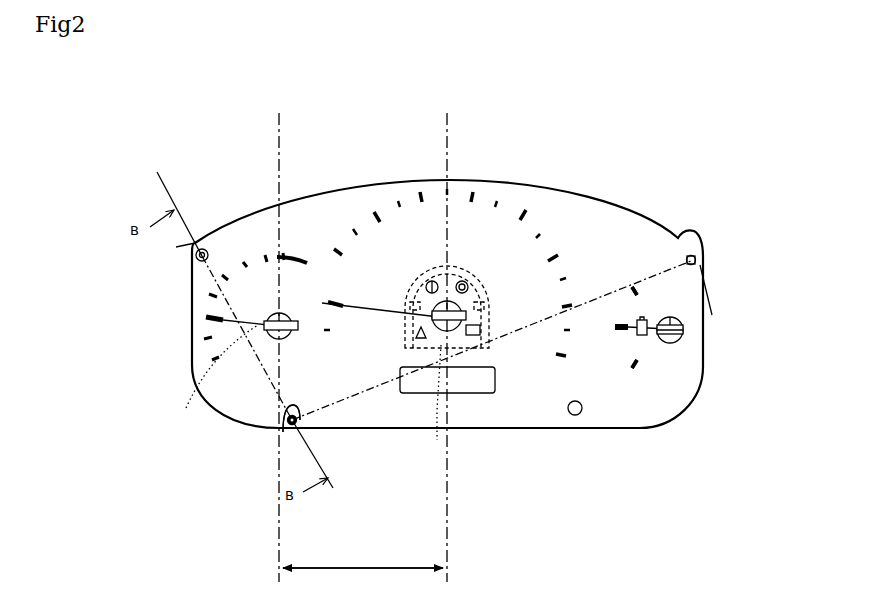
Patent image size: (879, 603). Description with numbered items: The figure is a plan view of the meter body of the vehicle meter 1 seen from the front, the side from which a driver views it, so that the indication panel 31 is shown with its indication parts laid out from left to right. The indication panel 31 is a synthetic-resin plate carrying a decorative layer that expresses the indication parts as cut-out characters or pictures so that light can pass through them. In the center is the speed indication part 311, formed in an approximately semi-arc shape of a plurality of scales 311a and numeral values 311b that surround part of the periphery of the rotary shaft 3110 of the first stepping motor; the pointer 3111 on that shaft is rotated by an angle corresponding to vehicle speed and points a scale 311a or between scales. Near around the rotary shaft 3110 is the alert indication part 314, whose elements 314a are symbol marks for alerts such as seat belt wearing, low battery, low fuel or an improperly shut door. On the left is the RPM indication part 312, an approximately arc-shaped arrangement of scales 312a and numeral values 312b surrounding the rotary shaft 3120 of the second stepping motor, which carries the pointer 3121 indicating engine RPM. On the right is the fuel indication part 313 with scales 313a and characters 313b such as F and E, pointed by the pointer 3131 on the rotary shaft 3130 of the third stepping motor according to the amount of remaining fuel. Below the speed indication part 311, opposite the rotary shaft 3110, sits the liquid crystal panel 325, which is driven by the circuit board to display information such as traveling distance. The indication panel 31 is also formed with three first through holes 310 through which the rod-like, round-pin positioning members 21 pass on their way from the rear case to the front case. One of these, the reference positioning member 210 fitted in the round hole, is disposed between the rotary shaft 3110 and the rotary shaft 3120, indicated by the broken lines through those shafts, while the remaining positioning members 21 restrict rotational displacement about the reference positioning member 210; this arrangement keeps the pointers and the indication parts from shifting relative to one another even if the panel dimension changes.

The vehicle meter 1 is at (669, 118).
The positioning member 21 is at (191, 262).
The reference positioning member 210 is at (246, 463).
The indication panel 31 is at (386, 400).
The first through hole 310 is at (195, 243).
The speed indication part 311 is at (552, 216).
The scale 311a is at (330, 278).
The numeral value 311b is at (403, 229).
The rotary shaft 3110 is at (437, 440).
The pointer 3111 is at (384, 355).
The RPM indication part 312 is at (295, 228).
The scale 312a is at (265, 258).
The numeral value 312b is at (243, 275).
The rotary shaft 3120 is at (186, 408).
The pointer 3121 is at (264, 327).
The fuel indication part 313 is at (646, 280).
The scale 313a is at (637, 276).
The character 313b is at (659, 289).
The rotary shaft 3130 is at (677, 342).
The pointer 3131 is at (633, 366).
The alert indication part 314 is at (456, 262).
The element of the alert indication part 314a is at (470, 278).
The liquid crystal panel 325 is at (478, 378).